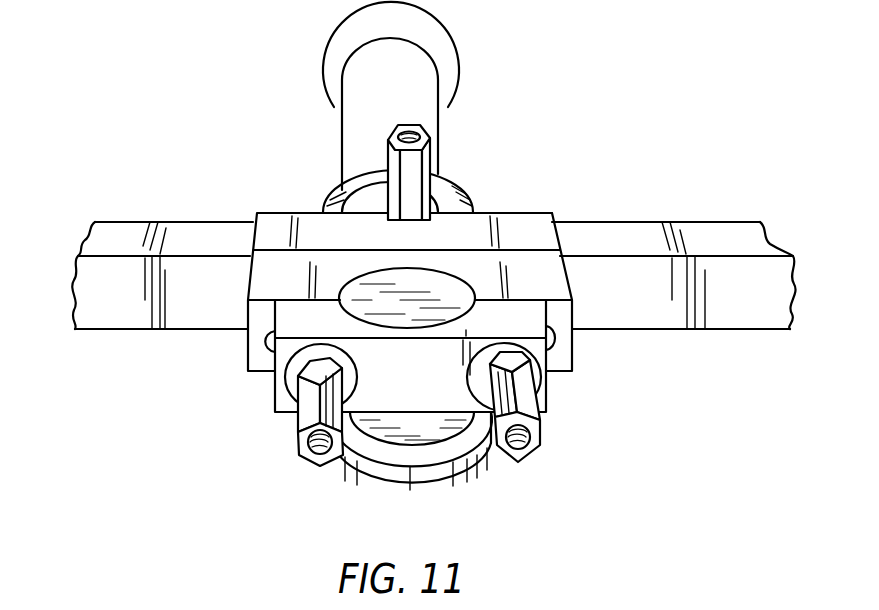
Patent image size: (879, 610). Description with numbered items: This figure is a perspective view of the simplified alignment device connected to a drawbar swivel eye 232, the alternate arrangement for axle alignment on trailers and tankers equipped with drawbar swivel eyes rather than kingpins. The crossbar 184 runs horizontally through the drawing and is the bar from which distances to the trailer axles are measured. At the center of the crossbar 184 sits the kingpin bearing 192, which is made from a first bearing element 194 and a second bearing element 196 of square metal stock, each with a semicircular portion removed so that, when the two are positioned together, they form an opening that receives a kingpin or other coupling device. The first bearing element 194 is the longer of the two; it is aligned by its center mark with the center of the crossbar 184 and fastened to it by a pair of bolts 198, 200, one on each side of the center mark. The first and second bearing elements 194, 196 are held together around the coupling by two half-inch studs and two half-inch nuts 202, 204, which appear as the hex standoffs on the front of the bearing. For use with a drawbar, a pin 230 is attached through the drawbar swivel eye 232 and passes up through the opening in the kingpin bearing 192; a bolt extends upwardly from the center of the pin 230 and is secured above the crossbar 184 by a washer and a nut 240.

The crossbar 184 is at (193, 228).
The nut 240 is at (388, 142).
The bolt 198 is at (265, 340).
The bolt 200 is at (556, 345).
The first bearing element 194 is at (257, 361).
The kingpin bearing 192 is at (562, 364).
The second bearing element 196 is at (275, 407).
The stud and nut 202 is at (298, 449).
The stud and nut 204 is at (540, 442).
The pin 230 is at (375, 476).
The drawbar swivel eye 232 is at (417, 432).